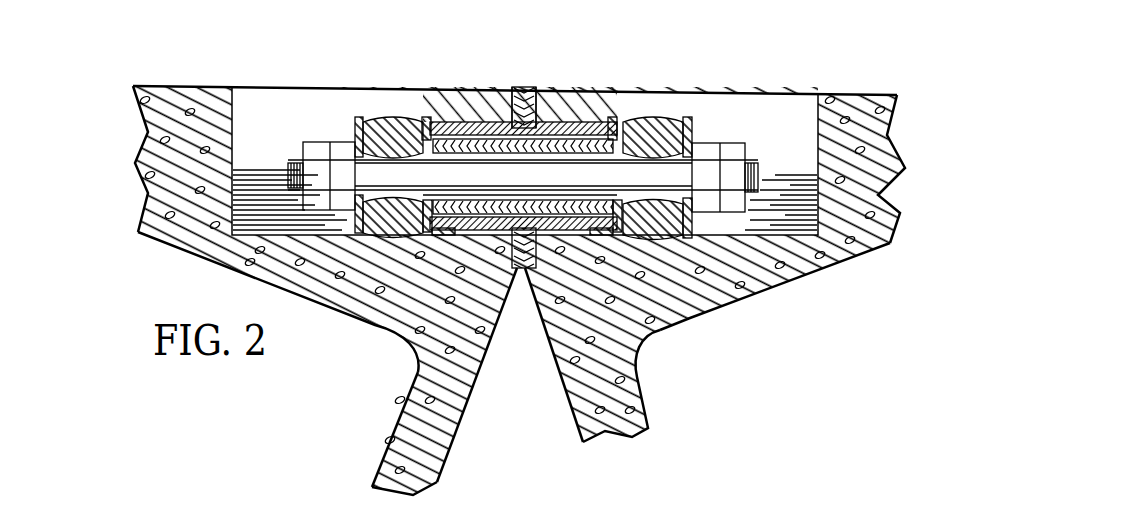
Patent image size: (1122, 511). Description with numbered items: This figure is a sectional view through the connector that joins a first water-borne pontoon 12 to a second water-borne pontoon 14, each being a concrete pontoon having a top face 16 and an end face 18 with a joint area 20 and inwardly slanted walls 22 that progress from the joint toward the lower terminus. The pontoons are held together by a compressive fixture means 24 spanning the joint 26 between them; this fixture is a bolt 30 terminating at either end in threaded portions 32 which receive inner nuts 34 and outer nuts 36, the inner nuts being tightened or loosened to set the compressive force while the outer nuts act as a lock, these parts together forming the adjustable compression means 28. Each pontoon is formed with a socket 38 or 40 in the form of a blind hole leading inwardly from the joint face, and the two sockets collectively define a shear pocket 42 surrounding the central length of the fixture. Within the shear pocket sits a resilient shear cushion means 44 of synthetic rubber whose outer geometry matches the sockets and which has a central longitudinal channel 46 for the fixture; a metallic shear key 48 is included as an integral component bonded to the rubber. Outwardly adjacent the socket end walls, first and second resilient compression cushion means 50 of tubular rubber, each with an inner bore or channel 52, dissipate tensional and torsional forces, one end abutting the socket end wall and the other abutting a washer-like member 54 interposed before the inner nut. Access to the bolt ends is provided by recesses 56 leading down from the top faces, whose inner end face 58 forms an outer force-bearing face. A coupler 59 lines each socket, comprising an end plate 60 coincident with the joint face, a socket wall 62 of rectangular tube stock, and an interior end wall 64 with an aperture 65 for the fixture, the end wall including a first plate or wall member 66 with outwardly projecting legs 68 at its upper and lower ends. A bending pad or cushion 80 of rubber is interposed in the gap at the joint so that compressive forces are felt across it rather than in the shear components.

The first water-borne pontoon 12 is at (148, 128).
The second water-borne pontoon 14 is at (866, 141).
The top face 16 is at (192, 84).
The end face 18 is at (489, 304).
The joint area 20 is at (493, 185).
The inwardly slanted walls 22 is at (413, 380).
The fixture means 24 is at (372, 238).
The joint 26 is at (519, 280).
The adjustable compression means 28 is at (519, 132).
The bolt 30 is at (710, 306).
The threaded portions 32 is at (288, 168).
The inner nuts 34 is at (335, 145).
The outer nuts 36 is at (320, 147).
The socket 38 is at (466, 130).
The socket 40 is at (558, 133).
The shear pocket 42 is at (610, 188).
The resilient shear cushion means 44 is at (553, 145).
The central longitudinal channel 46 is at (523, 80).
The metallic shear key 48 is at (478, 163).
The resilient compression cushion means 50 is at (517, 99).
The inner bore or channel 52 is at (668, 180).
The washer-like member 54 is at (350, 133).
The recesses 56 is at (413, 113).
The inner end face of the recess 58 is at (526, 148).
The coupler 59 is at (597, 105).
The end plate 60 is at (523, 92).
The socket wall 62 is at (480, 147).
The interior end wall 64 is at (407, 118).
The aperture 65 is at (382, 237).
The first plate or wall member 66 is at (412, 239).
The outwardly projecting legs 68 is at (518, 87).
The bending pad or cushion 80 is at (528, 270).